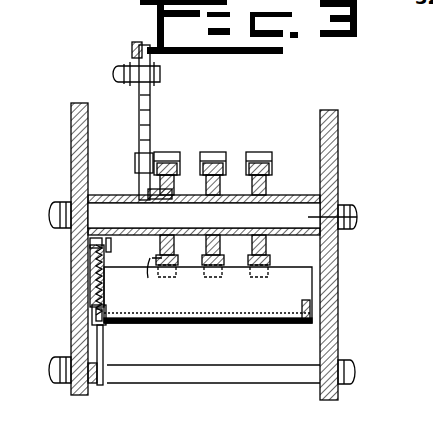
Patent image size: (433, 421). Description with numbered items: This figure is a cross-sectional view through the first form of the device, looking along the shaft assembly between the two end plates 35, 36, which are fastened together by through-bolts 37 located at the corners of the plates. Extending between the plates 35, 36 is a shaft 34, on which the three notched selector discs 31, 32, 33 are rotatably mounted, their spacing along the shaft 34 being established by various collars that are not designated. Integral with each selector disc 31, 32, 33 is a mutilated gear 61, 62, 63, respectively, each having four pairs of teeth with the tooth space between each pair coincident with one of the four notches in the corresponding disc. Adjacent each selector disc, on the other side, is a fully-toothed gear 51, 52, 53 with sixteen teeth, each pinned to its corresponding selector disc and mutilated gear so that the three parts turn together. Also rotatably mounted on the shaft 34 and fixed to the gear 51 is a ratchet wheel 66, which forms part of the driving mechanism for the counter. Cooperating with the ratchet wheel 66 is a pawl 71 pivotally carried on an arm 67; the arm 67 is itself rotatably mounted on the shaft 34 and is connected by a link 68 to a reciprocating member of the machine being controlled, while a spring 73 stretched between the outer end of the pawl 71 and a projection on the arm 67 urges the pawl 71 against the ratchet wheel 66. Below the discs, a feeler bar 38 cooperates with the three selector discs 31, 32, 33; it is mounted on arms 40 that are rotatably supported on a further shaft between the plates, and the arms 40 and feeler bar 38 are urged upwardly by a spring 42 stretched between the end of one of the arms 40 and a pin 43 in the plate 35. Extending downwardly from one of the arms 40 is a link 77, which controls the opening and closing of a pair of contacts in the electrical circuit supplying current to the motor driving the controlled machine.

The notched selector disc 31 is at (181, 183).
The notched selector disc 32 is at (227, 183).
The notched selector disc 33 is at (277, 185).
The shaft 34 is at (355, 217).
The end plate 35 is at (338, 139).
The end plate 36 is at (71, 158).
The through-bolts 37 is at (214, 376).
The feeler bar 38 is at (213, 323).
The arms 40 is at (96, 312).
The spring 42 is at (95, 265).
The pin 43 is at (95, 250).
The fully-toothed gear 51 is at (162, 152).
The fully-toothed gear 52 is at (208, 152).
The fully-toothed gear 53 is at (255, 152).
The mutilated gear 61 is at (174, 152).
The mutilated gear 62 is at (217, 152).
The mutilated gear 63 is at (266, 152).
The ratchet wheel 66 is at (151, 261).
The arm 67 is at (127, 116).
The link 68 is at (132, 46).
The pawl 71 is at (150, 173).
The spring 73 is at (140, 136).
The link 77 is at (103, 352).